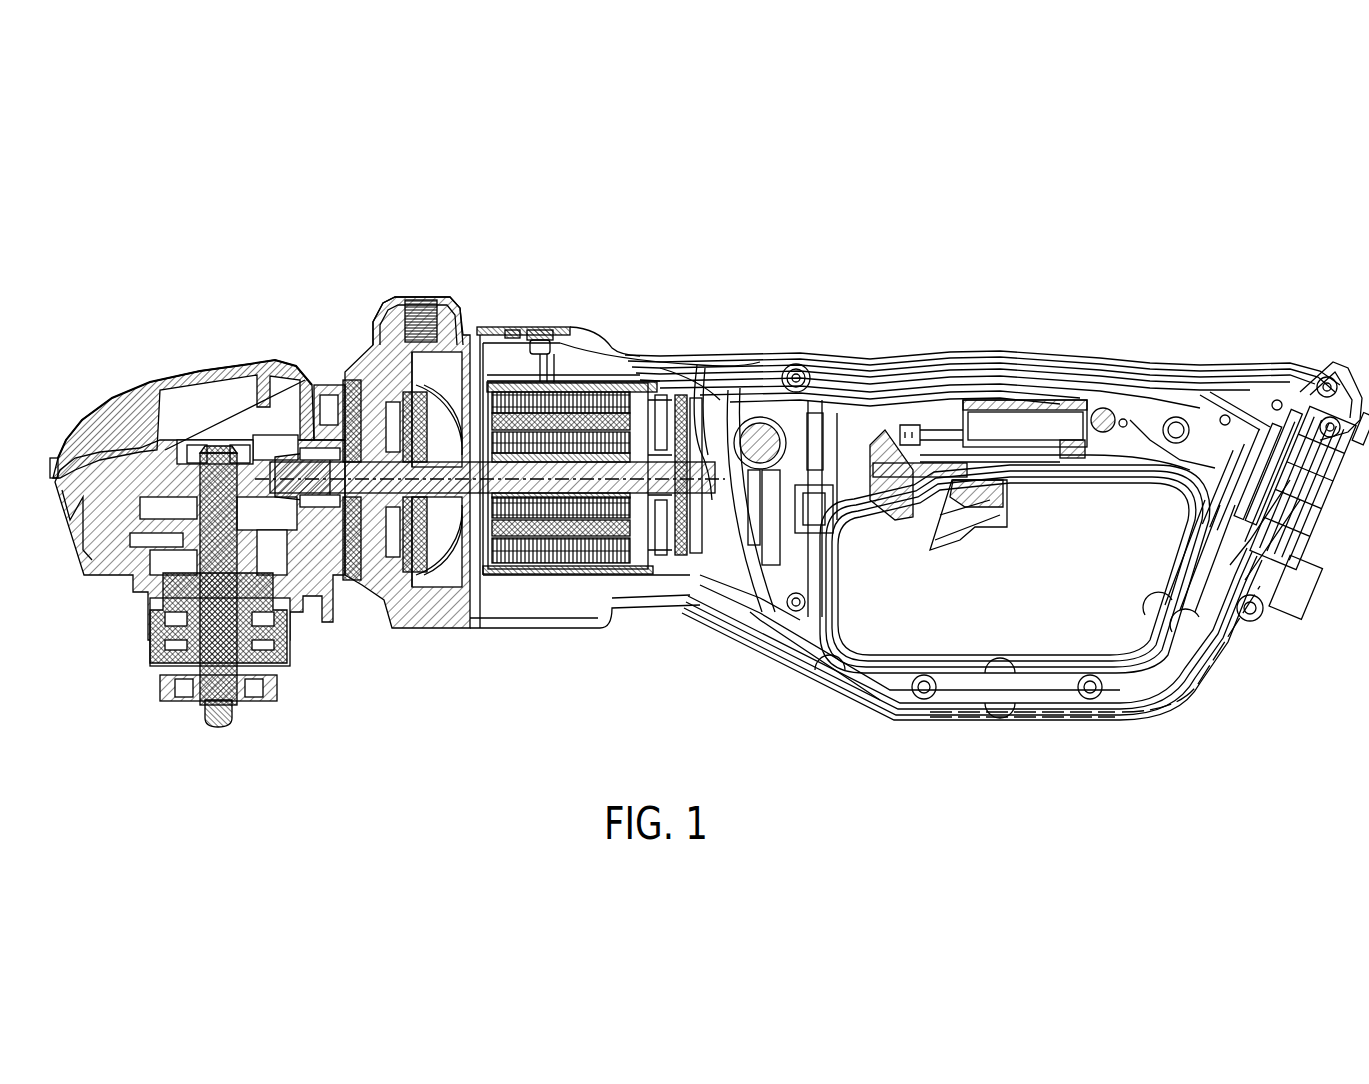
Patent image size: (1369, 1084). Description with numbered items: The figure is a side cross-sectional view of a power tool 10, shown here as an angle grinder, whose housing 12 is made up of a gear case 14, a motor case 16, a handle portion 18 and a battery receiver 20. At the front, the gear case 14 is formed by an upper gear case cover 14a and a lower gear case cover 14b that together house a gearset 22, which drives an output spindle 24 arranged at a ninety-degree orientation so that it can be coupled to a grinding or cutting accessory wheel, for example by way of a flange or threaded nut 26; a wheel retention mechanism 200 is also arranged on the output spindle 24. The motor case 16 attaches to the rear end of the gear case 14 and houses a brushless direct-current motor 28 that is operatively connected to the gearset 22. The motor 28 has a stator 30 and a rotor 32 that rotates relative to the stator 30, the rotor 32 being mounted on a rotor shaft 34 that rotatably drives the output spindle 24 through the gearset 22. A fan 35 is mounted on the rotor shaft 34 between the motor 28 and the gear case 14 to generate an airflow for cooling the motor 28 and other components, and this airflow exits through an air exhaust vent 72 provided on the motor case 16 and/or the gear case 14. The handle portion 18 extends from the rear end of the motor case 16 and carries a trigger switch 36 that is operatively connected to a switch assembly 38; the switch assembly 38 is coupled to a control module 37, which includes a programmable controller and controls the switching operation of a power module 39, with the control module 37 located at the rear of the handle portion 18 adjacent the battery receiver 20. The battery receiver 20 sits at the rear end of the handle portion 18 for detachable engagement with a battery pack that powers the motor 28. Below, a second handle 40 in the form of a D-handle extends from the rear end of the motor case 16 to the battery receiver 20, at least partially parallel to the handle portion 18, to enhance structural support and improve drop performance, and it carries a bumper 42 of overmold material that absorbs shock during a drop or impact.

The power tool 10 is at (703, 473).
The housing 12 is at (650, 290).
The gear case 14 is at (254, 464).
The upper gear case cover 14a is at (100, 400).
The lower gear case cover 14b is at (110, 578).
The motor case 16 is at (567, 307).
The handle portion 18 is at (978, 330).
The battery receiver 20 is at (1320, 530).
The gearset 22 is at (315, 512).
The output spindle 24 is at (180, 618).
The flange 26 is at (268, 690).
The motor 28 is at (605, 480).
The stator 30 is at (548, 560).
The rotor 32 is at (600, 545).
The rotor shaft 34 is at (440, 560).
The fan 35 is at (422, 395).
The trigger switch 36 is at (990, 530).
The control module 37 is at (1320, 388).
The switch assembly 38 is at (1043, 420).
The power module 39 is at (688, 425).
The second handle 40 is at (930, 715).
The bumper 42 is at (1130, 710).
The air exhaust vent 72 is at (355, 327).
The wheel retention mechanism 200 is at (140, 678).